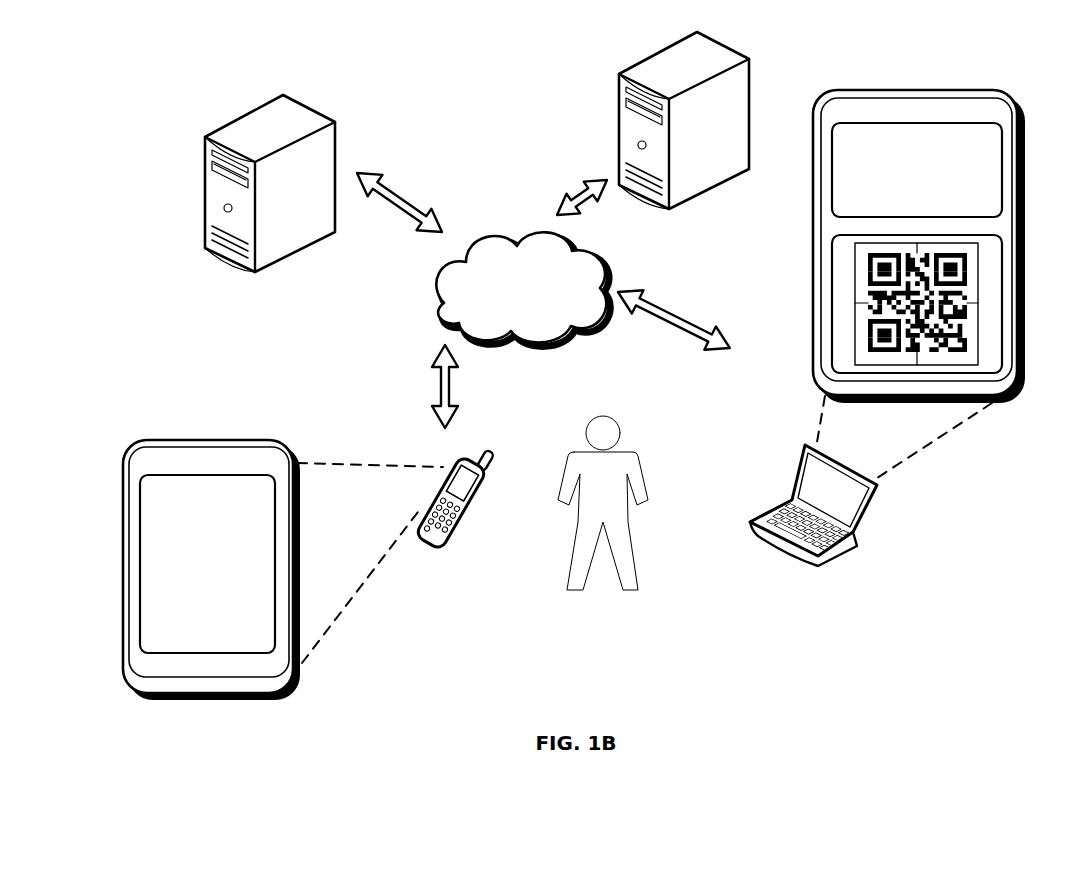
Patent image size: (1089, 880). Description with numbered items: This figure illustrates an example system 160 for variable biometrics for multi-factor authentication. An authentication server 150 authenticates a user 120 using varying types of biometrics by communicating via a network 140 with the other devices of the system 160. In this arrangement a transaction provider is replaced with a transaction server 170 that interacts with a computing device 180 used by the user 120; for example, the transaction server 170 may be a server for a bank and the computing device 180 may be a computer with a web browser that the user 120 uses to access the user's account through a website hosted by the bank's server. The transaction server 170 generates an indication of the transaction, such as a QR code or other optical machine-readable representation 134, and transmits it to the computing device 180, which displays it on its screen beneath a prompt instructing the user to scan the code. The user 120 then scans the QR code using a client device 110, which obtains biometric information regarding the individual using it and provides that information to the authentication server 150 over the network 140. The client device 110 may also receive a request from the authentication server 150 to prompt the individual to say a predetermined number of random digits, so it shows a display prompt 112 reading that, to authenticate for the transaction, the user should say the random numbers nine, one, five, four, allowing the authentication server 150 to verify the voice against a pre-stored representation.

The client device 110 is at (441, 460).
The client device display prompt 112 is at (299, 528).
The user 120 is at (562, 492).
The optical machine-readable representation 134 is at (977, 303).
The network 140 is at (523, 289).
The authentication server 150 is at (336, 127).
The system 160 is at (490, 84).
The transaction server 170 is at (749, 63).
The computing device 180 is at (780, 502).